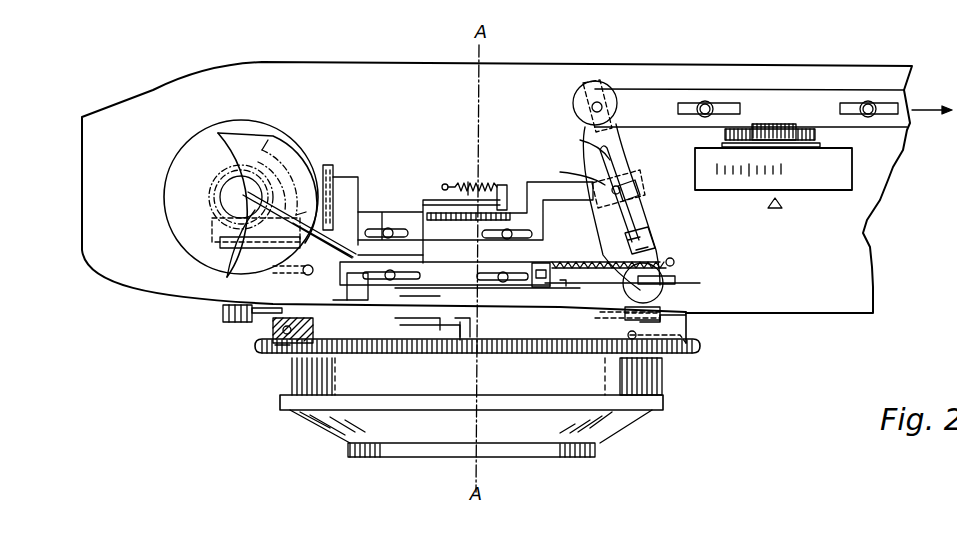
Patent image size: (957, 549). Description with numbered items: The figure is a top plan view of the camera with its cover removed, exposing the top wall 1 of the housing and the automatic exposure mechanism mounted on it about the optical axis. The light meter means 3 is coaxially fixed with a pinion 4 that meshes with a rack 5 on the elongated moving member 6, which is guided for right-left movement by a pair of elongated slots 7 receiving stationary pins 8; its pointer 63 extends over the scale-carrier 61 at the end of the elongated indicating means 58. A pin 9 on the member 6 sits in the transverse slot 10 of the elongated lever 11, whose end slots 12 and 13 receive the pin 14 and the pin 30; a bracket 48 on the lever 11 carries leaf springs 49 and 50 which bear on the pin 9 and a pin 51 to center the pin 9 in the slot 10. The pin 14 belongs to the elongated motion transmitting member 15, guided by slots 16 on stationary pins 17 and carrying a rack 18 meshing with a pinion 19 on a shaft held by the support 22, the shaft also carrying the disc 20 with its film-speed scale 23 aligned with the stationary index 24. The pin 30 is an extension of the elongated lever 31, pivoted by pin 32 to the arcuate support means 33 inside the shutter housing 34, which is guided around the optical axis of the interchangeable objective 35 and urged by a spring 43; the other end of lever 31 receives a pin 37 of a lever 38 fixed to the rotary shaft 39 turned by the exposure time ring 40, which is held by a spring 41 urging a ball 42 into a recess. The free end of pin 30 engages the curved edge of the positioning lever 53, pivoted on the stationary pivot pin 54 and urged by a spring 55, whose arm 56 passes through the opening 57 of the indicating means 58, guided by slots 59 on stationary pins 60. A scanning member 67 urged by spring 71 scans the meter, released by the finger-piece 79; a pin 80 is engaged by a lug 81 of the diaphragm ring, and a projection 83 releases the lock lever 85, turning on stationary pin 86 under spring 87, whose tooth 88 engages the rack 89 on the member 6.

The top wall 1 is at (223, 66).
The light meter means 3 is at (186, 150).
The pinion 4 is at (215, 183).
The rack 5 is at (205, 228).
The elongated moving member 6 is at (407, 214).
The elongated slots 7 is at (373, 229).
The stationary pins 8 is at (388, 238).
The pin 9 is at (640, 186).
The transverse elongated slot 10 is at (598, 190).
The elongated lever 11 is at (645, 140).
The longitudinally extending slot 12 is at (591, 80).
The longitudinally extending slot 13 is at (668, 262).
The pin 14 is at (592, 107).
The elongated motion transmitting member 15 is at (633, 95).
The longitudinal slots 16 is at (690, 103).
The stationary pins 17 is at (705, 101).
The rack 18 is at (806, 128).
The pinion 19 is at (765, 124).
The disc 20 is at (848, 175).
The support 22 is at (800, 146).
The scale 23 is at (750, 176).
The stationary index 24 is at (782, 206).
The pin 30 is at (672, 280).
The elongated lever 31 is at (588, 320).
The pivot pin 32 is at (660, 307).
The support means 33 is at (580, 330).
The shutter housing 34 is at (690, 320).
The interchangeable objective 35 is at (645, 385).
The pin 37 is at (396, 320).
The lever 38 is at (445, 290).
The rotary shaft 39 is at (460, 353).
The ring 40 is at (700, 350).
The spring 41 is at (272, 325).
The ball 42 is at (278, 346).
The spring 43 is at (690, 340).
The bracket 48 is at (656, 237).
The leaf spring 49 is at (640, 165).
The leaf spring 50 is at (600, 175).
The pin 51 is at (595, 160).
The positioning lever 53 is at (564, 268).
The stationary pivot pin 54 is at (566, 284).
The spring 55 is at (609, 252).
The arm 56 is at (617, 295).
The opening 57 is at (539, 263).
The elongated indicating means 58 is at (445, 272).
The longitudinal slots 59 is at (492, 272).
The stationary pins 60 is at (388, 280).
The scale-carrier 61 is at (306, 143).
The pointer 63 is at (238, 270).
The scanning member 67 is at (339, 170).
The spring 71 is at (300, 276).
The finger-piece 79 is at (222, 315).
The pin 80 is at (347, 288).
The lug 81 is at (333, 300).
The projection 83 is at (423, 255).
The lock lever 85 is at (425, 205).
The stationary pin 86 is at (500, 185).
The spring 87 is at (444, 184).
The tooth 88 is at (468, 231).
The rack 89 is at (468, 182).